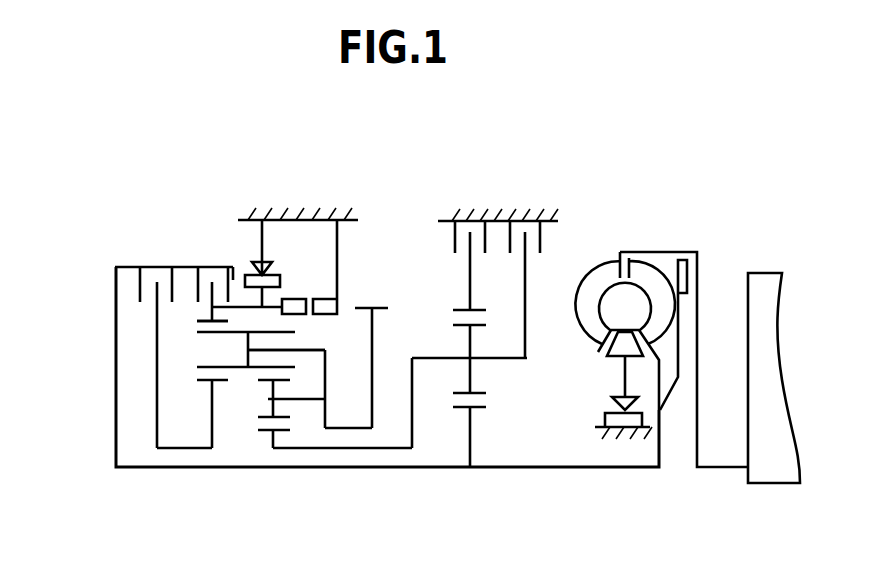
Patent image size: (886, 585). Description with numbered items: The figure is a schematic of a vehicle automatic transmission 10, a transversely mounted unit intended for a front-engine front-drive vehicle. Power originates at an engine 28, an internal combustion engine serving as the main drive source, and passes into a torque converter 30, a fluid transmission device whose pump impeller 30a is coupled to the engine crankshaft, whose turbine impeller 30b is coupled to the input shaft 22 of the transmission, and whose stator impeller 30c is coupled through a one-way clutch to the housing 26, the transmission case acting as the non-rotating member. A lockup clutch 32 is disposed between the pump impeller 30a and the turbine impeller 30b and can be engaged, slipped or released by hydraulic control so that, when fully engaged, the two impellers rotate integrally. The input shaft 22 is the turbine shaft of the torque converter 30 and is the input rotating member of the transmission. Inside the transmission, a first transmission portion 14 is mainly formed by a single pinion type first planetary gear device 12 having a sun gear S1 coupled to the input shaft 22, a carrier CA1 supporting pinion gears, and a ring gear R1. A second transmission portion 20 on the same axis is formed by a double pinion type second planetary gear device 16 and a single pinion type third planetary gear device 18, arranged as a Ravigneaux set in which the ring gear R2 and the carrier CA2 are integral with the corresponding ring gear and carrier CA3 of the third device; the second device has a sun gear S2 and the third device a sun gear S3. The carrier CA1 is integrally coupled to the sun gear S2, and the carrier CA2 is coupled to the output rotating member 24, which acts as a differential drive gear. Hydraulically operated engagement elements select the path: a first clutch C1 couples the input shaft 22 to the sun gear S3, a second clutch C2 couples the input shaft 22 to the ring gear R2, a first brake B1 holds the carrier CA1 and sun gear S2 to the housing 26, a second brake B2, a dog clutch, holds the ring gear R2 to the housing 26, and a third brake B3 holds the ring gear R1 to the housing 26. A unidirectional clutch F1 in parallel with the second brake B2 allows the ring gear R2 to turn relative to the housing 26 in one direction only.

The vehicle automatic transmission 10 is at (678, 105).
The first planetary gear device 12 is at (468, 487).
The first transmission portion 14 is at (550, 489).
The second planetary gear device 16 is at (278, 484).
The third planetary gear device 18 is at (215, 477).
The second transmission portion 20 is at (153, 491).
The input shaft 22 is at (638, 472).
The output rotating member 24 is at (383, 306).
The housing 26 is at (297, 216).
The engine 28 is at (764, 283).
The torque converter 30 is at (627, 227).
The pump impeller 30a is at (590, 303).
The turbine impeller 30b is at (657, 320).
The stator impeller 30c is at (614, 362).
The lockup clutch 32 is at (679, 300).
The first clutch C1 is at (174, 343).
The second clutch C2 is at (214, 280).
The first brake B1 is at (541, 289).
The second brake B2 is at (275, 267).
The third brake B3 is at (490, 259).
The unidirectional clutch F1 is at (257, 263).
The ring gear R1 is at (460, 307).
The ring gear R2 is at (207, 321).
The sun gear S1 is at (478, 408).
The sun gear S2 is at (267, 431).
The sun gear S3 is at (210, 382).
The carrier CA1 is at (490, 360).
The carrier CA2 is at (300, 348).
The carrier CA3 is at (343, 343).